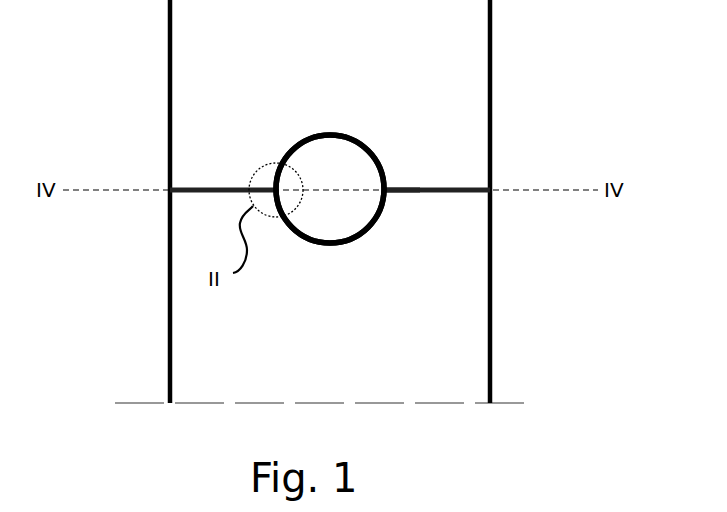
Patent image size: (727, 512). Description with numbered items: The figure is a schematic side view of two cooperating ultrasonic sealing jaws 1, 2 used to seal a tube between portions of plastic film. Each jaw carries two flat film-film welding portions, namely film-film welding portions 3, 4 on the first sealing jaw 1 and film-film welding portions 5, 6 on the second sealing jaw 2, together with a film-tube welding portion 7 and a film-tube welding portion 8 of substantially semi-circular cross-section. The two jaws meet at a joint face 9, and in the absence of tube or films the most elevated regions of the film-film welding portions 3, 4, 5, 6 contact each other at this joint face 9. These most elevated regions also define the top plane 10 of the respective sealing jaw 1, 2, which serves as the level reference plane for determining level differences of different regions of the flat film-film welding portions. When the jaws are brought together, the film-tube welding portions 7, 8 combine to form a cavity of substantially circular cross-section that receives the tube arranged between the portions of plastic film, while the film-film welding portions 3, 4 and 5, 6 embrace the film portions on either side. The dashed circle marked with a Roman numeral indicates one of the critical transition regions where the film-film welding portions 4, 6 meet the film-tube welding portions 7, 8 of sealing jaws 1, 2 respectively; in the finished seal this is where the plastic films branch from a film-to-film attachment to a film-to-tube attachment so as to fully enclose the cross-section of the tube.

The sealing jaw 1 is at (373, 293).
The sealing jaw 2 is at (388, 73).
The film-film welding portion 3 is at (435, 190).
The film-film welding portion 4 is at (215, 190).
The film-film welding portion 5 is at (435, 190).
The film-film welding portion 6 is at (215, 190).
The film-tube welding portion 7 is at (328, 243).
The film-tube welding portion 8 is at (328, 135).
The joint face 9 is at (398, 190).
The top plane 10 is at (357, 190).